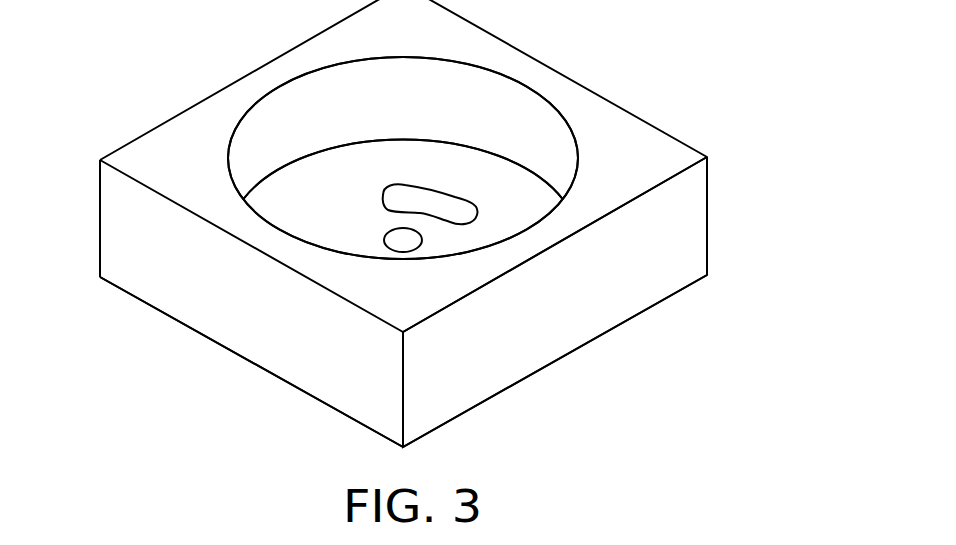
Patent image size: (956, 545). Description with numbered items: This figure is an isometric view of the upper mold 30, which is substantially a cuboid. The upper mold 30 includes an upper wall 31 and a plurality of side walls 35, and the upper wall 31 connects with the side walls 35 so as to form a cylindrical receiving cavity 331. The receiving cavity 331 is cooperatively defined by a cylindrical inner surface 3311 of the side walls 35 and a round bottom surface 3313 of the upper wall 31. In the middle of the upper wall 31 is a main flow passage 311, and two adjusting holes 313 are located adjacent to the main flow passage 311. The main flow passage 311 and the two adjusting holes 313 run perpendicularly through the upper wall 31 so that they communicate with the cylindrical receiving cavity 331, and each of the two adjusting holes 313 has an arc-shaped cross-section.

The upper mold 30 is at (648, 97).
The upper wall 31 is at (257, 366).
The side walls 35 is at (670, 228).
The receiving cavity 331 is at (135, 2).
The cylindrical inner surface 3311 is at (322, 123).
The round bottom surface 3313 is at (303, 198).
The adjusting holes 313 is at (438, 200).
The main flow passage 311 is at (412, 238).